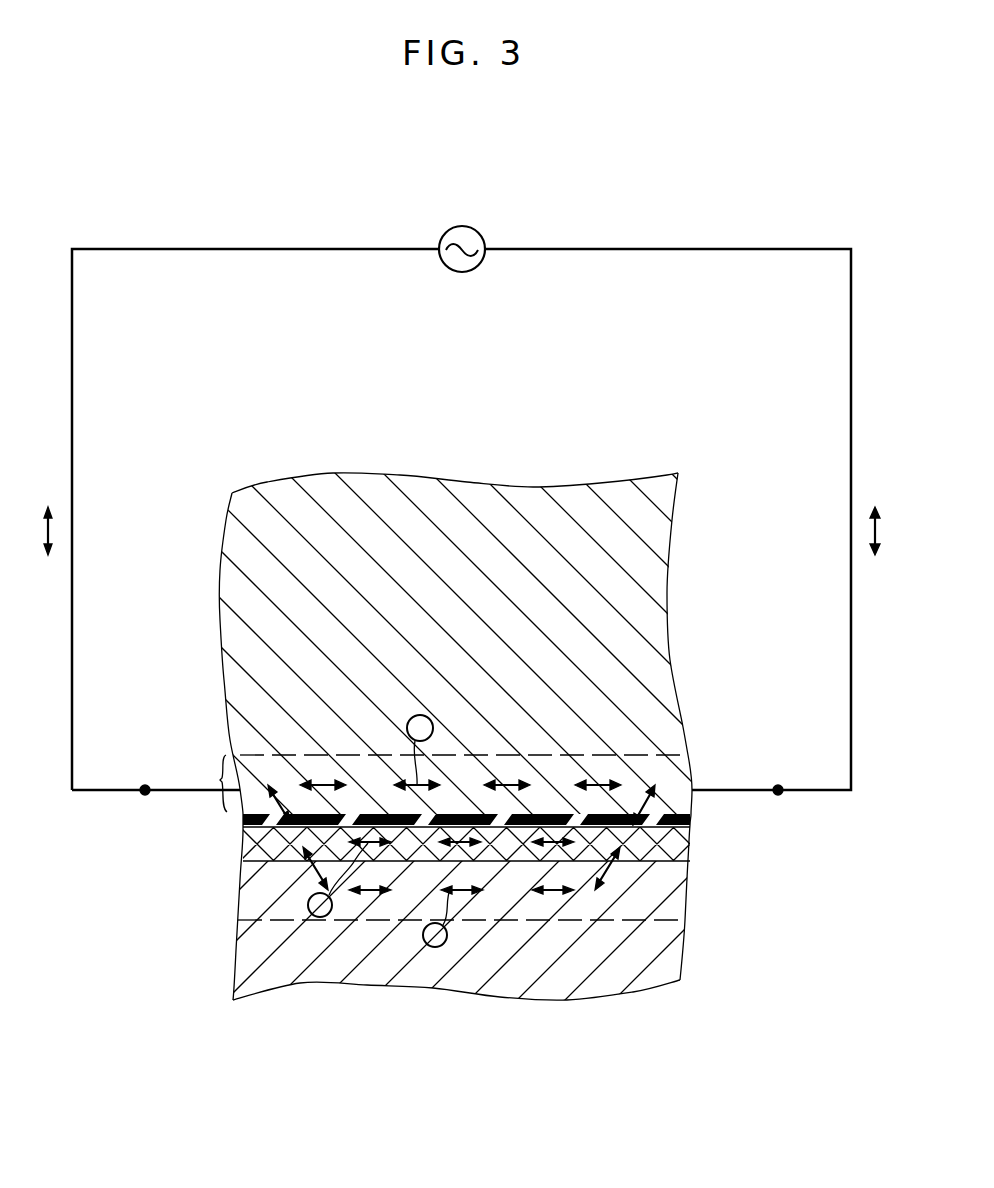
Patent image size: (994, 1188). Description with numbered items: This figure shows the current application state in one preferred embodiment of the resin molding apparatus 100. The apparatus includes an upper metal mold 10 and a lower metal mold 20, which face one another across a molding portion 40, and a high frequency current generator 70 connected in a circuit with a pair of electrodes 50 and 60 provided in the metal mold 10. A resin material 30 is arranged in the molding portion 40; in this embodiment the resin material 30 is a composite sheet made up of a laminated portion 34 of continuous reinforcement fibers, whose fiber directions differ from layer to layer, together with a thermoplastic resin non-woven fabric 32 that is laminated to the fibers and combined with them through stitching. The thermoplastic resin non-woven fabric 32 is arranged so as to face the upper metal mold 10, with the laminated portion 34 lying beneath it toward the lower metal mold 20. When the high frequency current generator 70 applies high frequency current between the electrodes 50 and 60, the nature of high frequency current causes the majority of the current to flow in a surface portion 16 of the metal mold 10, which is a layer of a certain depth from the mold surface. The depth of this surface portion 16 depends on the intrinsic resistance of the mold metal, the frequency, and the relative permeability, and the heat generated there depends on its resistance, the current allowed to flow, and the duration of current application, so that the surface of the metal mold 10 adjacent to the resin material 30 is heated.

The resin molding apparatus 100 is at (817, 213).
The metal mold 10 is at (233, 640).
The surface portion 16 is at (220, 780).
The metal mold 20 is at (237, 940).
The resin material 30 is at (434, 836).
The thermoplastic resin non-woven fabric 32 is at (243, 820).
The laminated portion of the continuous reinforcement fibers 34 is at (243, 848).
The molding portion 40 is at (554, 797).
The electrode 50 is at (145, 791).
The electrode 60 is at (780, 794).
The high frequency current generator 70 is at (480, 230).